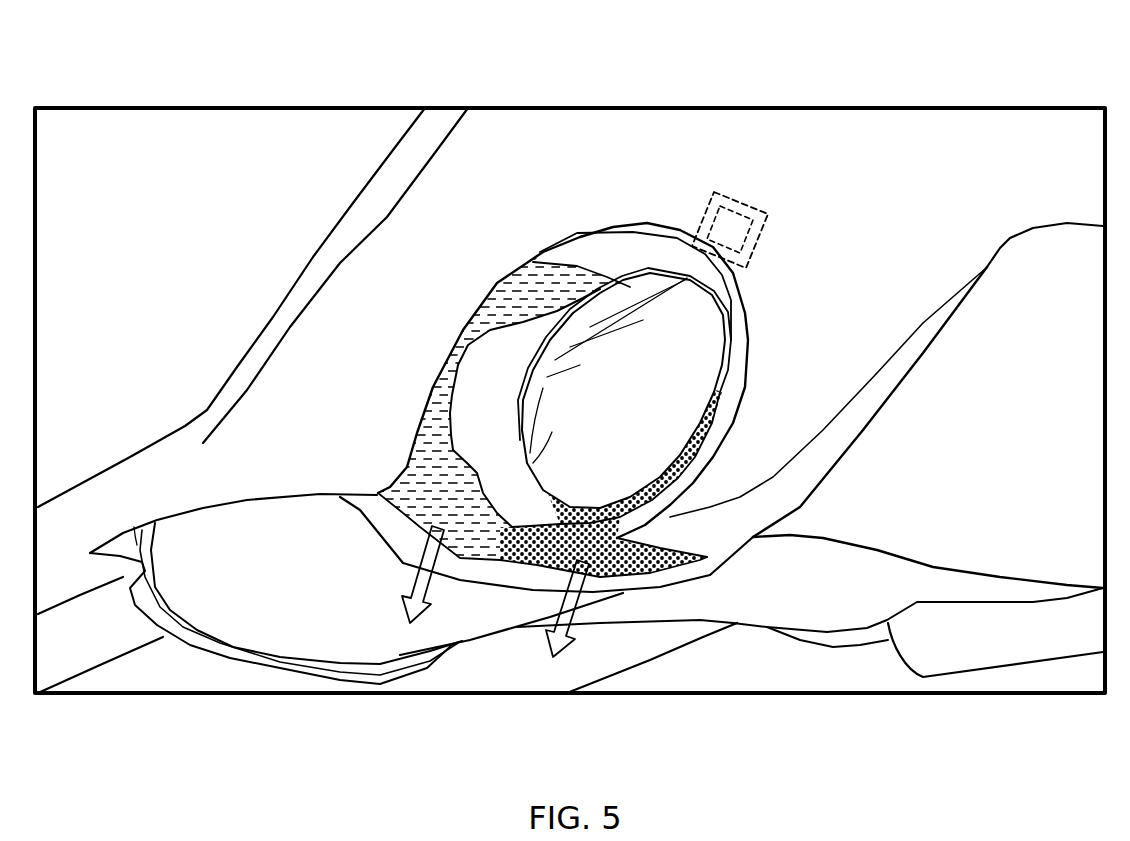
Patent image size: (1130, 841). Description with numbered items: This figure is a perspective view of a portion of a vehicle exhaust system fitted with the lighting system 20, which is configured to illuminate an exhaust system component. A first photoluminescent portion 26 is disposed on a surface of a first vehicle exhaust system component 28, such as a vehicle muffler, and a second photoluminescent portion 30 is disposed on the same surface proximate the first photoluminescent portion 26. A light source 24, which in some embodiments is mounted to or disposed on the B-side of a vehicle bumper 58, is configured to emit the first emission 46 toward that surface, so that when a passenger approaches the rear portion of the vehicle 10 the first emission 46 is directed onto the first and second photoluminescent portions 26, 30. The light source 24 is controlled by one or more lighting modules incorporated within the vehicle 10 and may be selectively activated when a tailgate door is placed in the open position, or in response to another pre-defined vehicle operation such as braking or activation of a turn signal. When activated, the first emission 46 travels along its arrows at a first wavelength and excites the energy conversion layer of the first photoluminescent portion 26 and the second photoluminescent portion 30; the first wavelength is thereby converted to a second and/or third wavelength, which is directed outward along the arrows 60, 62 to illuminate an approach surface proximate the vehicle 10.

The vehicle 10 is at (86, 78).
The vehicle bumper 58 is at (335, 146).
The lighting system 20 is at (587, 200).
The light source 24 is at (753, 192).
The first emission 46 is at (664, 260).
The first vehicle exhaust system component 28 is at (258, 628).
The second photoluminescent portion 30 is at (420, 525).
The arrows 62 is at (428, 587).
The arrows 60 is at (570, 617).
The first photoluminescent portion 26 is at (645, 578).